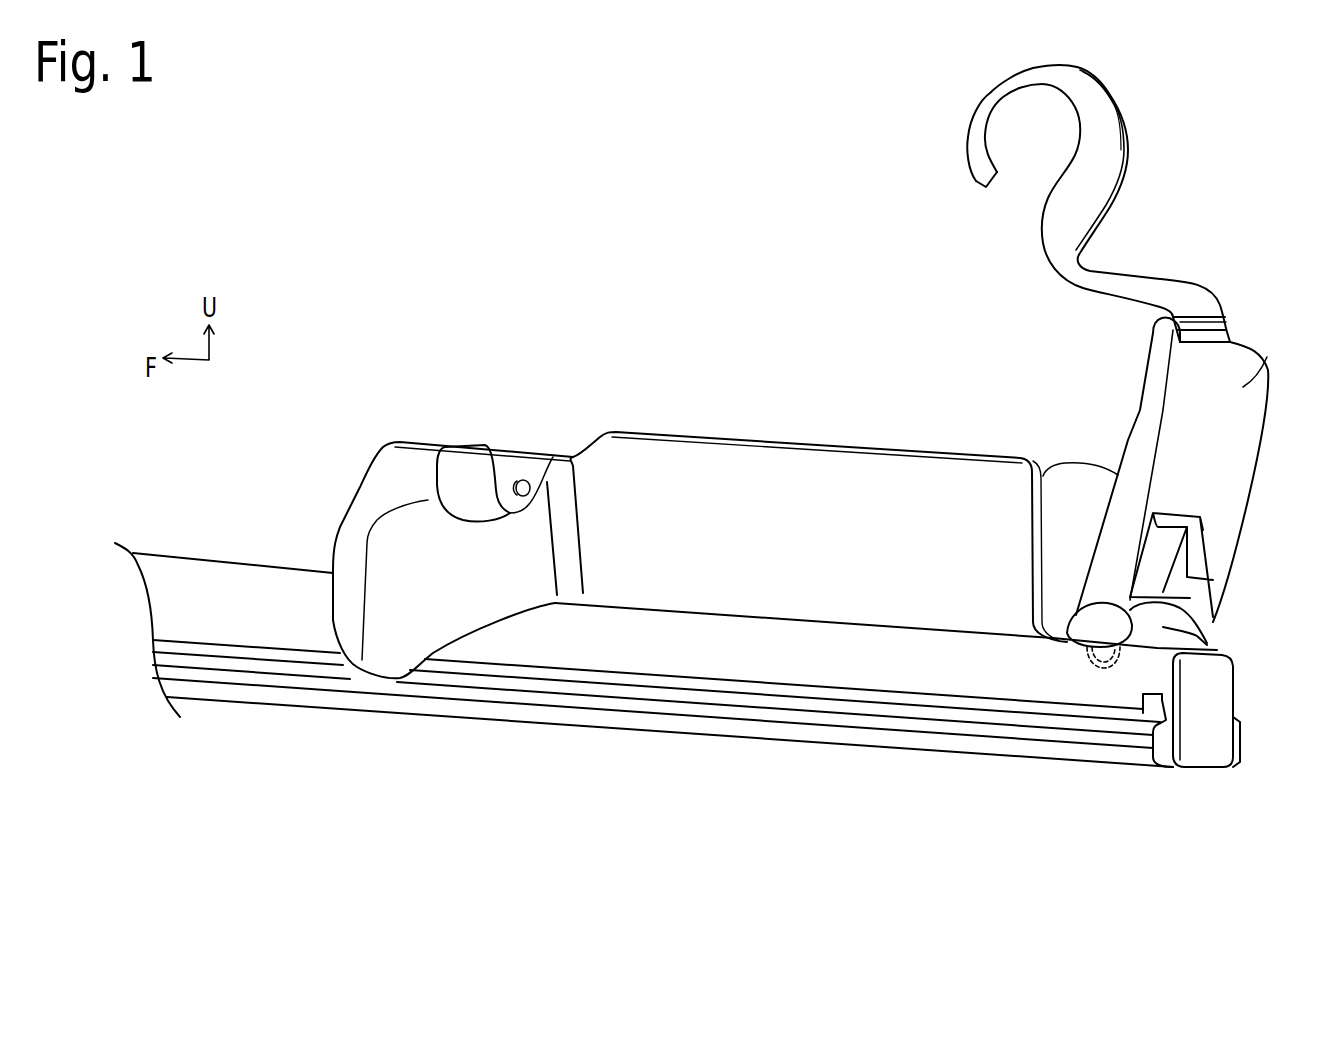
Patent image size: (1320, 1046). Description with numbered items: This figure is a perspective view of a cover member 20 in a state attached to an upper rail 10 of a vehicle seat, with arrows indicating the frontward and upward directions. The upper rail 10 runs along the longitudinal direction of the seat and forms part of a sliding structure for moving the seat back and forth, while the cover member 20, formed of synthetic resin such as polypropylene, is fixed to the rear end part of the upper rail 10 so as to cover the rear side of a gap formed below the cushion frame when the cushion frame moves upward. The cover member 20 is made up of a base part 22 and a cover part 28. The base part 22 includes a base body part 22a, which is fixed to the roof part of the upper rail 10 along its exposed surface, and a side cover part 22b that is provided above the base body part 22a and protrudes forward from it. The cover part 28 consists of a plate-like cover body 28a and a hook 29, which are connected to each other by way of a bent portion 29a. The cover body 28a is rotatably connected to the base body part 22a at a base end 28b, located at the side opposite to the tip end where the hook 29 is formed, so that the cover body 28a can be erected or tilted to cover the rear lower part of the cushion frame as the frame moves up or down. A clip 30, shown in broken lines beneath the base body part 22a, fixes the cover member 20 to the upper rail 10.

The upper rail 10 is at (900, 680).
The cover member 20 is at (1138, 416).
The base part 22 is at (775, 646).
The base body part 22a is at (1076, 615).
The side cover part 22b is at (985, 617).
The cover part 28 is at (1193, 392).
The cover body 28a is at (1268, 355).
The base end 28b is at (1220, 615).
The hook 29 is at (1082, 193).
The bent portion 29a is at (1225, 330).
The clip 30 is at (1108, 668).